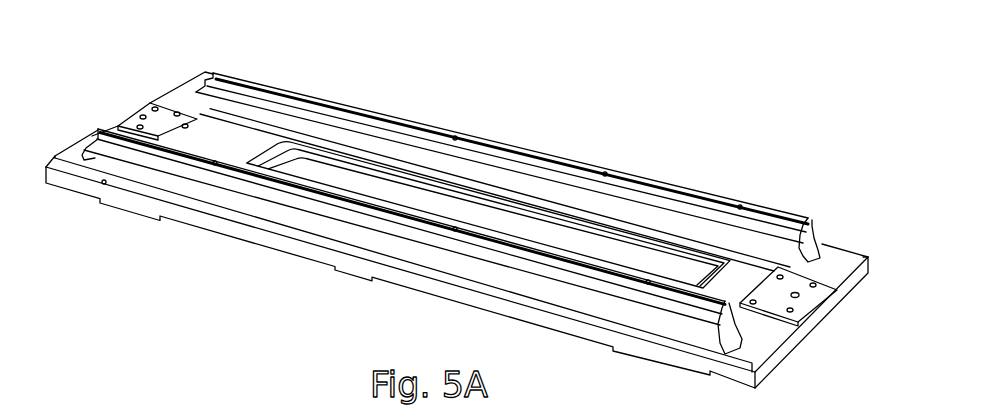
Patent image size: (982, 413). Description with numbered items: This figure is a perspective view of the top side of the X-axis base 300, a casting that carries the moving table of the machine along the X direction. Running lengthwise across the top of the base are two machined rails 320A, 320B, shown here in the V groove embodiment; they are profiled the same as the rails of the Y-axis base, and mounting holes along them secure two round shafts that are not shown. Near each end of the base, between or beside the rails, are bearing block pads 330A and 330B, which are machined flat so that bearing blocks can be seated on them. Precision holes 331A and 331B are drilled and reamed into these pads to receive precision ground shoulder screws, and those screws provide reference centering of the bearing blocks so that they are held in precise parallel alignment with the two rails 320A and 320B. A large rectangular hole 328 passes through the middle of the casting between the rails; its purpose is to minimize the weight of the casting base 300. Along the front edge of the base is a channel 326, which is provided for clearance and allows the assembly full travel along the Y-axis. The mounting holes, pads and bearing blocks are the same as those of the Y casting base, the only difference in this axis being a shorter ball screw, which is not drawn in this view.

The X-axis base 300 is at (275, 242).
The channel 326 is at (131, 203).
The rectangular hole 328 is at (337, 182).
The machined rail 320A is at (792, 215).
The machined rail 320B is at (695, 295).
The bearing block pad 330A is at (802, 287).
The precision hole 331A is at (800, 297).
The bearing block pad 330B is at (160, 122).
The precision hole 331B is at (140, 118).